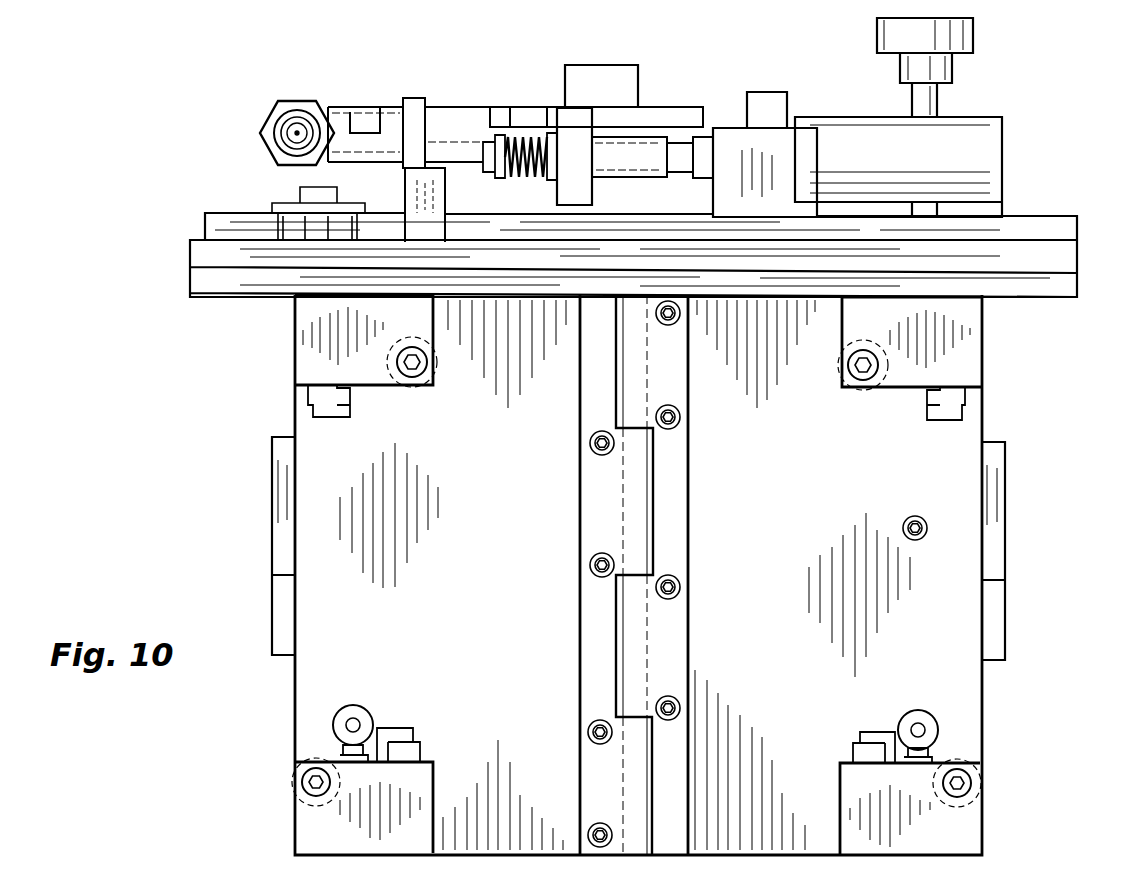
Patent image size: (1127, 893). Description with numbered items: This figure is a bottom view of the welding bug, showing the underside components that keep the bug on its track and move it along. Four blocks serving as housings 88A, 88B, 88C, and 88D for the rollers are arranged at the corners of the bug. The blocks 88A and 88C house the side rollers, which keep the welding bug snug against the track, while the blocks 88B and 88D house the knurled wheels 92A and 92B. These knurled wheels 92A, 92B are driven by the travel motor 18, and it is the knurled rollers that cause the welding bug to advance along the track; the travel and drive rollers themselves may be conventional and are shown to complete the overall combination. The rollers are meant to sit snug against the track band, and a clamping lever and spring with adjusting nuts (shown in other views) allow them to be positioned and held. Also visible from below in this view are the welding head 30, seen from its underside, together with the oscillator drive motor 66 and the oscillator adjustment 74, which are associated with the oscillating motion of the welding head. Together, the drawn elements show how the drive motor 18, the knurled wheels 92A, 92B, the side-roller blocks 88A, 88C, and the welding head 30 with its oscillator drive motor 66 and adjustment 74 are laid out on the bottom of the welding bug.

The travel motor 18 is at (957, 350).
The welding head 30 is at (272, 107).
The oscillator drive motor 66 is at (978, 153).
The oscillator adjustment 74 is at (632, 142).
The block housing for rollers 88A is at (293, 823).
The block housing for rollers 88B is at (293, 358).
The block housing for rollers 88C is at (982, 828).
The block housing for rollers 88D is at (983, 377).
The knurled wheel 92A is at (840, 357).
The knurled wheel 92B is at (435, 360).